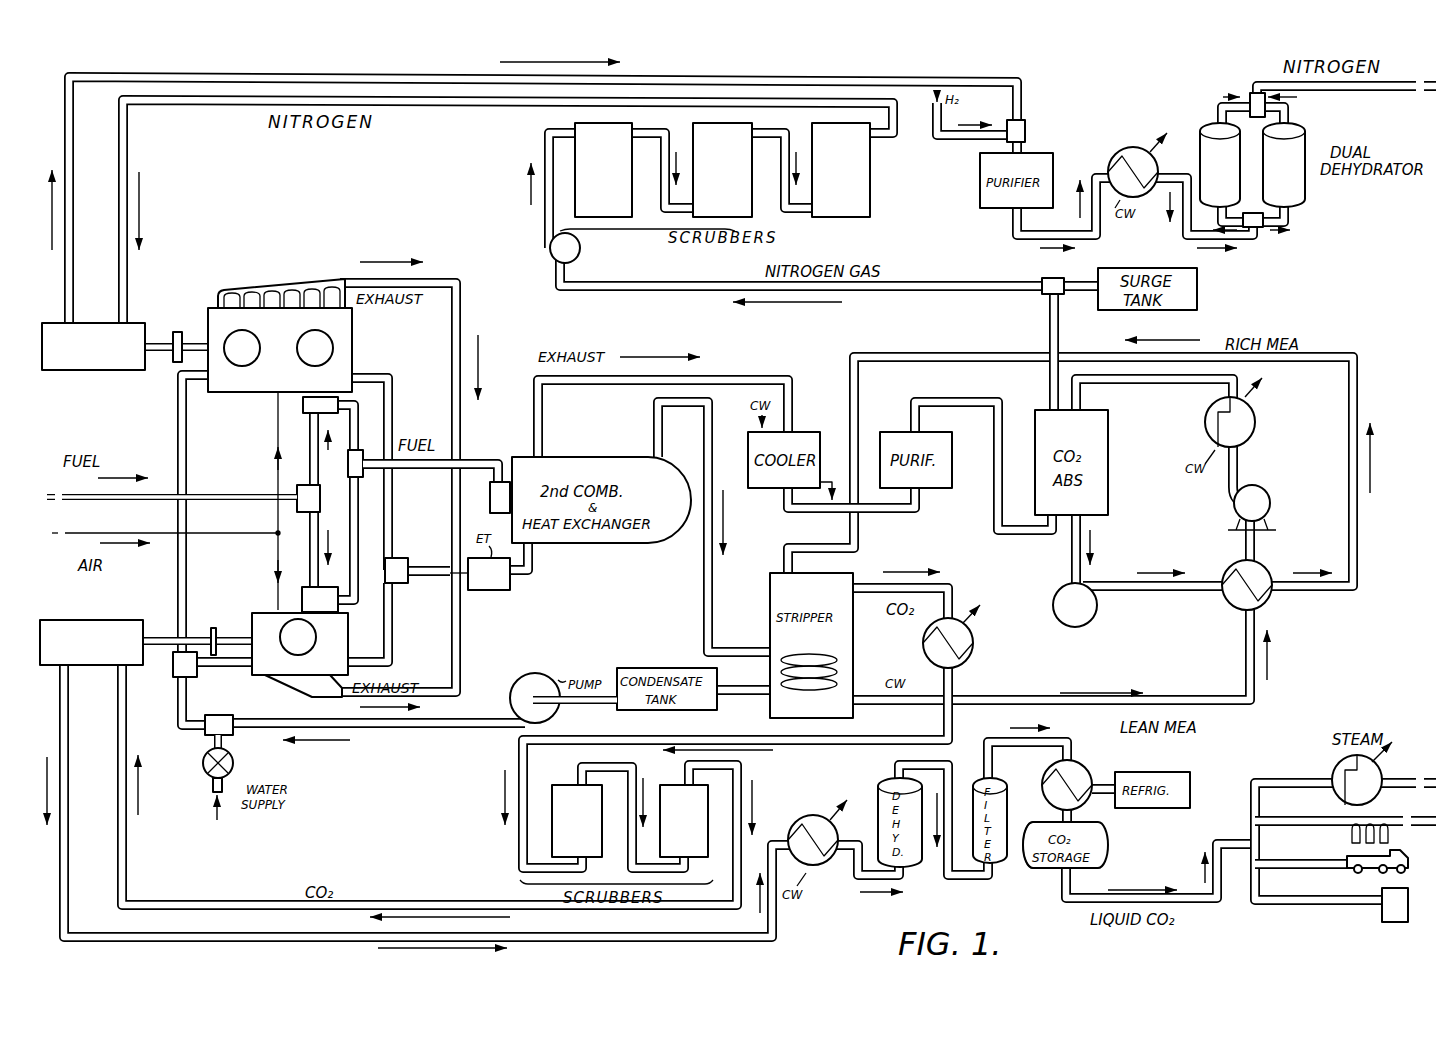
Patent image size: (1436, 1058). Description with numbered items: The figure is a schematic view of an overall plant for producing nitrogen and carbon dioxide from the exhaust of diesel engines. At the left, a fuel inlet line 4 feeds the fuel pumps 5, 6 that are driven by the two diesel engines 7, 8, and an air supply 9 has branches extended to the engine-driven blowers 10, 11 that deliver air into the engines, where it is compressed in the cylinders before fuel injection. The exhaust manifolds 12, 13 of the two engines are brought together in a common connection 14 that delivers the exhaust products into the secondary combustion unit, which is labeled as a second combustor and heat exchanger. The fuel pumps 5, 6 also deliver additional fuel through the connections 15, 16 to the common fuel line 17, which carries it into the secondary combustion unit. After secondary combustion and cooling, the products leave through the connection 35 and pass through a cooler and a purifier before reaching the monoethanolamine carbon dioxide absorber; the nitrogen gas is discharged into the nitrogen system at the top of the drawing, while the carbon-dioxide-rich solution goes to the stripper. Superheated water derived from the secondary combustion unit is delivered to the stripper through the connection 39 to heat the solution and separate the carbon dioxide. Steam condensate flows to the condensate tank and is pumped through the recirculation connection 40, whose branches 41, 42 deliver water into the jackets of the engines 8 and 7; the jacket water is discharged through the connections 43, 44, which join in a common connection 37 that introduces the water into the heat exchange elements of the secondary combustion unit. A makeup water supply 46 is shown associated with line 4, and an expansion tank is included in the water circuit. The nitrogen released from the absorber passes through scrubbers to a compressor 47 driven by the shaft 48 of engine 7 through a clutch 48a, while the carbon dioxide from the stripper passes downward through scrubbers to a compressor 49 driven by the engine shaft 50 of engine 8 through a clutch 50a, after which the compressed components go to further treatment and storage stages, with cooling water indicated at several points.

The fuel inlet line 4 is at (110, 503).
The fuel pump 5 is at (303, 414).
The fuel pump 6 is at (303, 597).
The engine 7 is at (295, 350).
The engine 8 is at (304, 629).
The air supply 9 is at (216, 536).
The blower 10 is at (298, 368).
The blower 11 is at (288, 624).
The exhaust manifold 12 is at (283, 282).
The exhaust manifold 13 is at (293, 688).
The common connection 14 is at (490, 496).
The connection 15 is at (357, 442).
The connection 16 is at (350, 540).
The common fuel line 17 is at (480, 458).
The connection 35 is at (533, 375).
The common connection 37 is at (443, 578).
The connection 39 is at (653, 418).
The connection 40 is at (400, 728).
The branch 41 is at (232, 673).
The branch 42 is at (194, 383).
The connection 43 is at (397, 507).
The connection 44 is at (392, 633).
The supply line for makeup water 46 is at (208, 743).
The compressor 47 is at (85, 371).
The shaft 48 is at (164, 342).
The clutch 48a is at (178, 331).
The compressor 49 is at (100, 620).
The engine shaft 50 is at (158, 652).
The clutch 50a is at (213, 627).